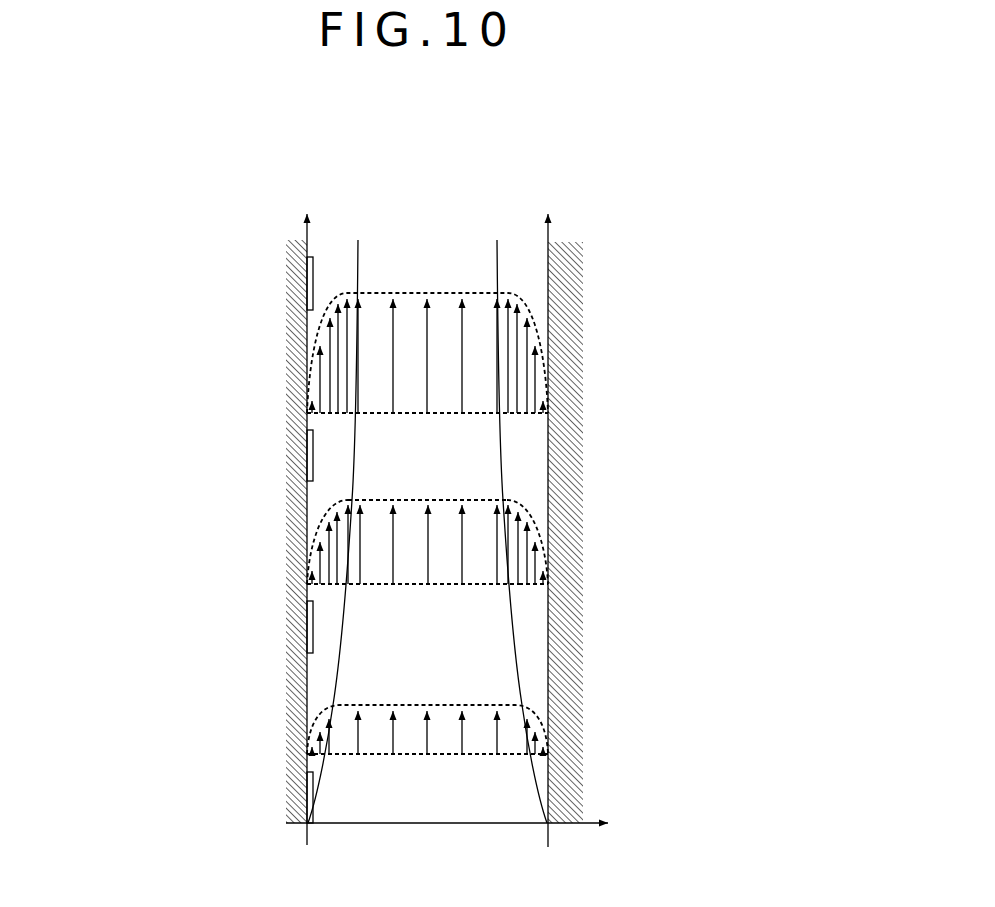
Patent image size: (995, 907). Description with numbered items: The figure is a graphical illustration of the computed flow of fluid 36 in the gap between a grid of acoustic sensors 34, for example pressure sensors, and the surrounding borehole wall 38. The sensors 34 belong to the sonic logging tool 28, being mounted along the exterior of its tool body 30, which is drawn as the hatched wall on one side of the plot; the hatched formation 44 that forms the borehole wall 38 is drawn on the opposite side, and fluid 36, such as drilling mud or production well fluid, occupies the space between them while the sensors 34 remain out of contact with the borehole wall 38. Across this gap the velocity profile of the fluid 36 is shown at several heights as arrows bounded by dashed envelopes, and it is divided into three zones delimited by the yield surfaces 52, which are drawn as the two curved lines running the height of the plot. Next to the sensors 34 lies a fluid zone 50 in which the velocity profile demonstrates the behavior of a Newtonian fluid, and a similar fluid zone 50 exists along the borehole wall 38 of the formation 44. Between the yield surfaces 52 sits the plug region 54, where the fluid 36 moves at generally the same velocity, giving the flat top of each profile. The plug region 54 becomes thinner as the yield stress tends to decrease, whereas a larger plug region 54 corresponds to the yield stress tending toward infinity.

The sonic logging tool 28 is at (307, 156).
The tool body 30 is at (302, 242).
The acoustic sensors 34 is at (313, 279).
The fluid 36 is at (474, 232).
The borehole wall 38 is at (548, 277).
The formation 44 is at (575, 689).
The fluid zone 50 is at (621, 492).
The yield surface 52 is at (621, 422).
The plug region 54 is at (637, 457).